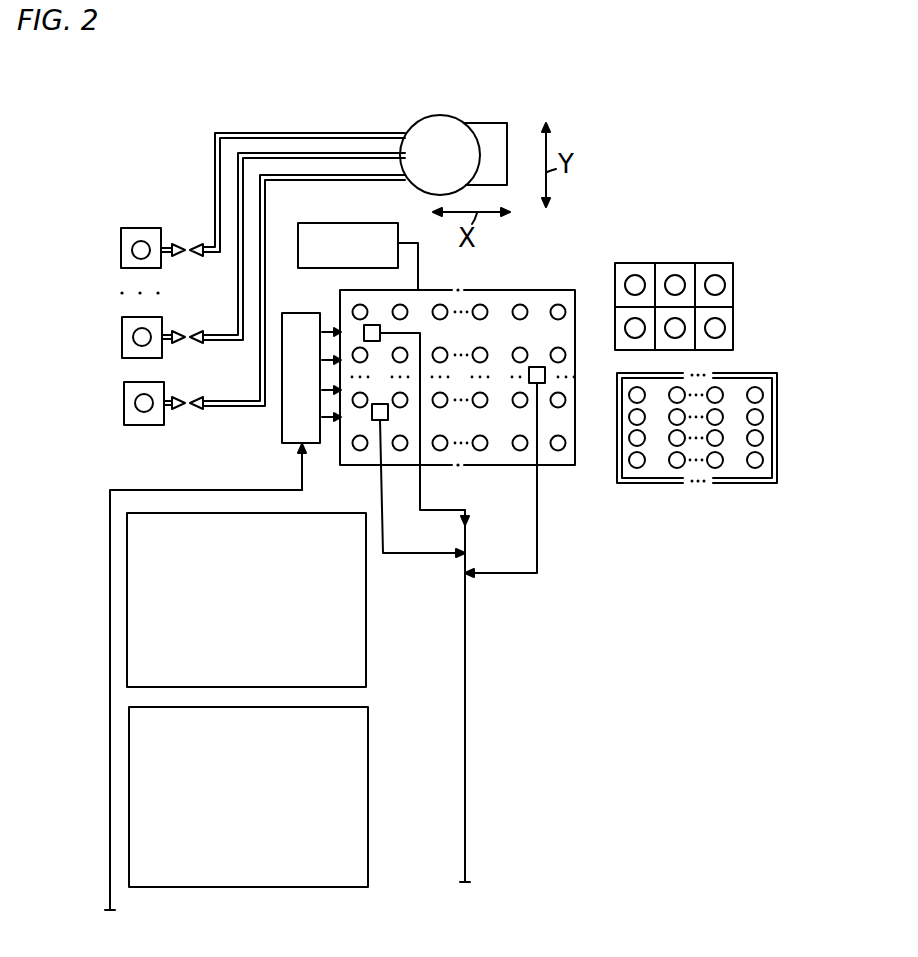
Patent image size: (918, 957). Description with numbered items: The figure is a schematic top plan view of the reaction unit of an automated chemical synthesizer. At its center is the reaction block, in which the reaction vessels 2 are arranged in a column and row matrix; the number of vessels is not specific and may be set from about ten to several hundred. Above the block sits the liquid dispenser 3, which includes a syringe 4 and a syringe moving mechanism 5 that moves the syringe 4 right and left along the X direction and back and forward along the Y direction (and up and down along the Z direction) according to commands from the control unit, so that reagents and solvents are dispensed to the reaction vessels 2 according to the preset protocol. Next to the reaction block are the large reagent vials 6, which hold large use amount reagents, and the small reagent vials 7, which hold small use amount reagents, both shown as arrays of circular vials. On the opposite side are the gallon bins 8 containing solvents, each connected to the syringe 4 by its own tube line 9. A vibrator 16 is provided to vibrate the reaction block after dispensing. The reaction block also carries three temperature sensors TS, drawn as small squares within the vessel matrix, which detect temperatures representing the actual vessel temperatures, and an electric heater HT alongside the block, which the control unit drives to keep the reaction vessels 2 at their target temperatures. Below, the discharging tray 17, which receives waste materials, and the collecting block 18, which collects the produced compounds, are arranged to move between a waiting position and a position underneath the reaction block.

The reaction vessels 2 is at (520, 304).
The liquid dispenser 3 is at (505, 63).
The syringe 4 is at (449, 116).
The syringe moving mechanism 5 is at (493, 123).
The large reagent vials 6 is at (635, 277).
The small reagent vials 7 is at (558, 290).
The gallon bins 8 is at (142, 240).
The tube lines 9 is at (214, 140).
The vibrator 16 is at (330, 222).
The discharging tray 17 is at (367, 657).
The collecting block 18 is at (369, 807).
The temperature sensors TS is at (364, 330).
The electric heater HT is at (282, 437).